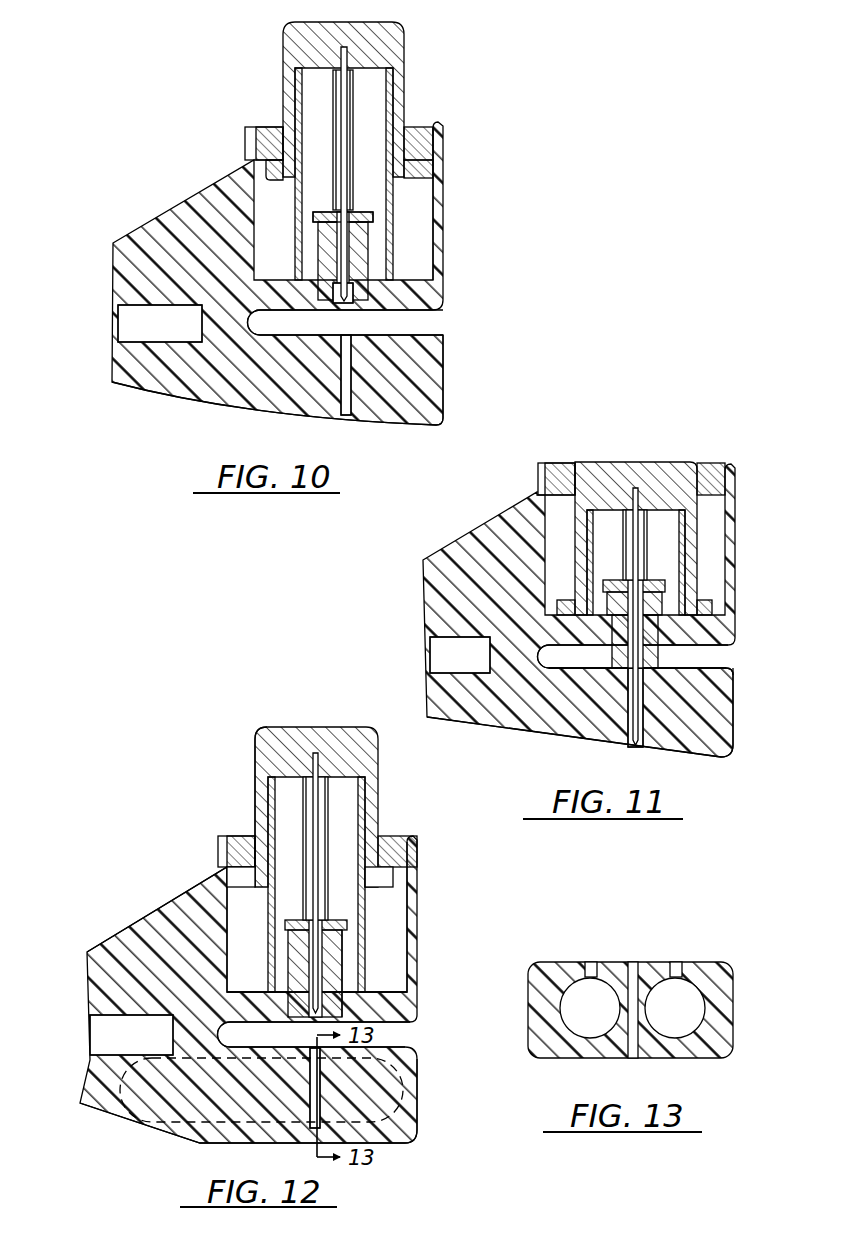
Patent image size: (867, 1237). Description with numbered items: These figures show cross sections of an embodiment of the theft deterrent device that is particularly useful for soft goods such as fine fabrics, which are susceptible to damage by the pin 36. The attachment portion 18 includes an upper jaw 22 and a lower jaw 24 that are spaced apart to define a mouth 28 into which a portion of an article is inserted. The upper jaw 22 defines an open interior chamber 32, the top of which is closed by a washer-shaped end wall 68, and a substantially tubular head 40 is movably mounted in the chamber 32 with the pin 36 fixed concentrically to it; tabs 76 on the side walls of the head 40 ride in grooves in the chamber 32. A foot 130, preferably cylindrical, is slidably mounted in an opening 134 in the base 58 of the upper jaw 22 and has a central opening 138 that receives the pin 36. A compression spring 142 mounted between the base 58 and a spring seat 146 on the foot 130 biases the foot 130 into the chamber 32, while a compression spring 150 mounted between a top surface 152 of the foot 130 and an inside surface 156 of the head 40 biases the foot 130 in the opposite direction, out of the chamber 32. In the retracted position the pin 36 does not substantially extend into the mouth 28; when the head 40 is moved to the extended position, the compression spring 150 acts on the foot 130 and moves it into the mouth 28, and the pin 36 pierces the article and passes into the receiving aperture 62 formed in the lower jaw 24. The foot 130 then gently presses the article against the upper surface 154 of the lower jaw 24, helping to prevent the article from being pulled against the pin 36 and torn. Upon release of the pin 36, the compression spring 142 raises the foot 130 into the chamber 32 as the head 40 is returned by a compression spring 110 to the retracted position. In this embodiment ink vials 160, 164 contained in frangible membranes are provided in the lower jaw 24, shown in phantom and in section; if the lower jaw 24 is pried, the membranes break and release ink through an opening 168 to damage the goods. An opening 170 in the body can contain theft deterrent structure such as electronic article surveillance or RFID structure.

In FIG. 12, the attachment portion 18 is at (153, 885).
In FIG. 11, the upper jaw 22 is at (737, 490).
In FIG. 10, the lower jaw 24 is at (277, 380).
In FIG. 11, the lower jaw 24 is at (735, 720).
In FIG. 12, the lower jaw 24 is at (415, 1102).
In FIG. 13, the lower jaw 24 is at (733, 965).
In FIG. 11, the mouth 28 is at (718, 650).
In FIG. 10, the interior chamber 32 is at (268, 218).
In FIG. 12, the interior chamber 32 is at (395, 913).
In FIG. 10, the pin 36 is at (345, 105).
In FIG. 11, the pin 36 is at (635, 715).
In FIG. 12, the pin 36 is at (318, 800).
In FIG. 10, the head 40 is at (407, 52).
In FIG. 11, the head 40 is at (630, 462).
In FIG. 12, the head 40 is at (295, 727).
In FIG. 10, the base 58 is at (436, 308).
In FIG. 12, the base 58 is at (282, 1020).
In FIG. 10, the receiving aperture 62 is at (347, 417).
In FIG. 11, the receiving aperture 62 is at (640, 745).
In FIG. 12, the receiving aperture 62 is at (315, 1088).
In FIG. 13, the receiving aperture 62 is at (635, 962).
In FIG. 10, the washer-shaped end wall 68 is at (261, 128).
In FIG. 11, the washer-shaped end wall 68 is at (712, 462).
In FIG. 12, the washer-shaped end wall 68 is at (395, 836).
In FIG. 10, the tabs 76 is at (262, 175).
In FIG. 11, the tabs 76 is at (712, 608).
In FIG. 12, the tabs 76 is at (310, 877).
In FIG. 10, the compression spring 110 is at (344, 174).
In FIG. 11, the compression spring 110 is at (683, 550).
In FIG. 12, the compression spring 110 is at (362, 900).
In FIG. 10, the foot 130 is at (438, 262).
In FIG. 11, the foot 130 is at (612, 655).
In FIG. 12, the foot 130 is at (360, 968).
In FIG. 12, the opening 134 is at (332, 1015).
In FIG. 10, the central opening 138 is at (348, 300).
In FIG. 10, the compression spring 142 is at (373, 240).
In FIG. 11, the compression spring 142 is at (665, 600).
In FIG. 12, the compression spring 142 is at (355, 948).
In FIG. 10, the spring seat 146 is at (373, 218).
In FIG. 10, the compression spring 150 is at (358, 120).
In FIG. 11, the compression spring 150 is at (650, 530).
In FIG. 12, the top surface 152 is at (290, 918).
In FIG. 11, the upper surface 154 is at (700, 668).
In FIG. 12, the inside surface 156 is at (262, 790).
In FIG. 12, the ink vial 160 is at (158, 1138).
In FIG. 13, the ink vial 160 is at (590, 1020).
In FIG. 13, the ink vial 164 is at (700, 1015).
In FIG. 13, the opening 168 is at (591, 962).
In FIG. 10, the opening 170 is at (132, 321).
In FIG. 11, the opening 170 is at (433, 654).
In FIG. 12, the opening 170 is at (102, 1033).